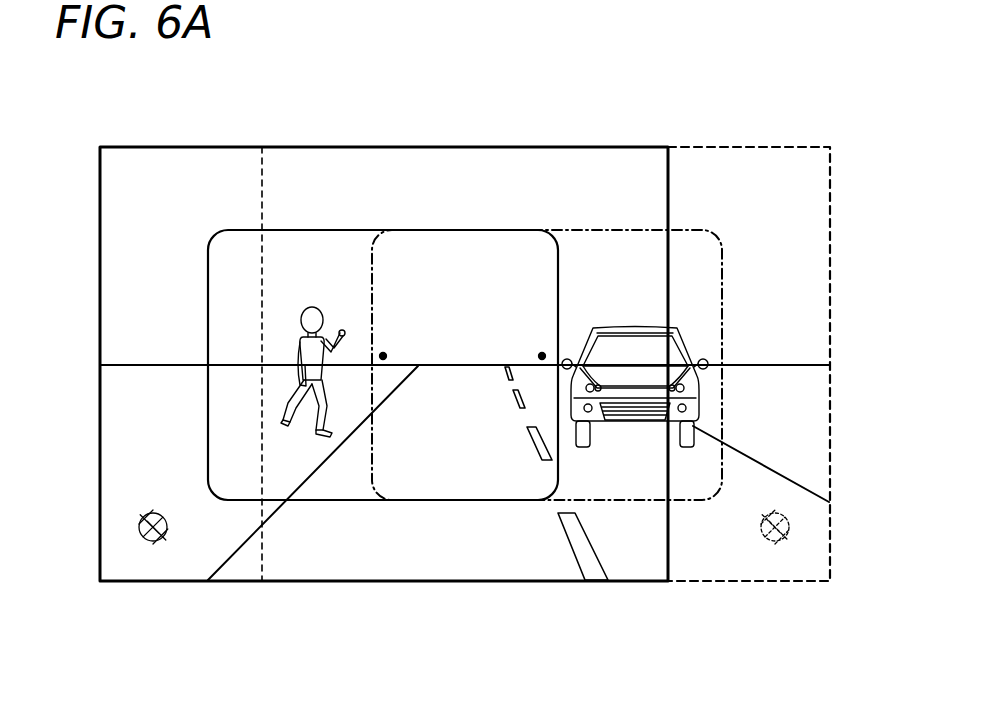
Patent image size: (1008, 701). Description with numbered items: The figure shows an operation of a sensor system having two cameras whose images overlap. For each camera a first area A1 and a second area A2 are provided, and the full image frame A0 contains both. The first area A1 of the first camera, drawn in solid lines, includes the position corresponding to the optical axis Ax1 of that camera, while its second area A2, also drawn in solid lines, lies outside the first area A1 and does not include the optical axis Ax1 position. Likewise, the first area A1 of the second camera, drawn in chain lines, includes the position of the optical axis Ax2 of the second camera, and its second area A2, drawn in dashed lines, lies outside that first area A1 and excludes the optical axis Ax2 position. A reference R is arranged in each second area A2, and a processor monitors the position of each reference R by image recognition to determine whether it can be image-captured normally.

The captured image area A0 is at (197, 147).
The first area A1 is at (322, 250).
The second area A2 is at (114, 328).
The optical axis of the first camera Ax1 is at (383, 354).
The optical axis of the second camera Ax2 is at (542, 354).
The reference R is at (159, 541).